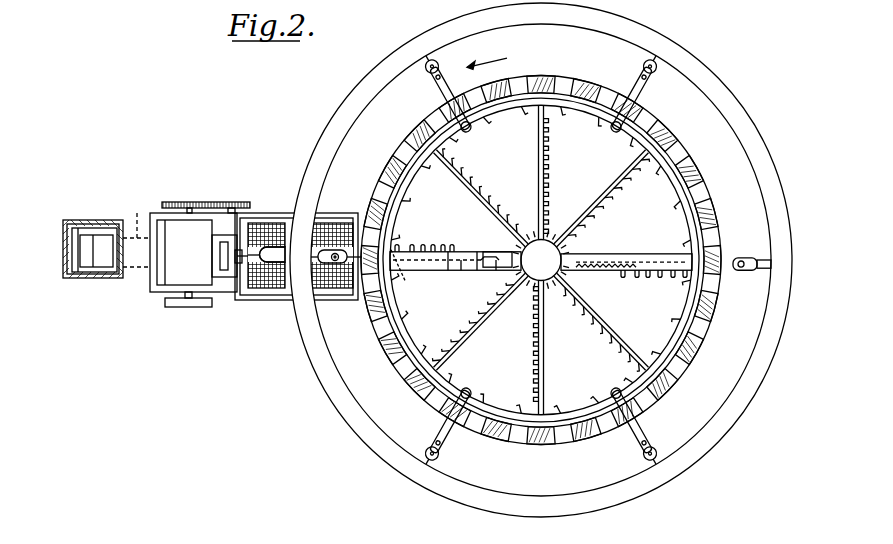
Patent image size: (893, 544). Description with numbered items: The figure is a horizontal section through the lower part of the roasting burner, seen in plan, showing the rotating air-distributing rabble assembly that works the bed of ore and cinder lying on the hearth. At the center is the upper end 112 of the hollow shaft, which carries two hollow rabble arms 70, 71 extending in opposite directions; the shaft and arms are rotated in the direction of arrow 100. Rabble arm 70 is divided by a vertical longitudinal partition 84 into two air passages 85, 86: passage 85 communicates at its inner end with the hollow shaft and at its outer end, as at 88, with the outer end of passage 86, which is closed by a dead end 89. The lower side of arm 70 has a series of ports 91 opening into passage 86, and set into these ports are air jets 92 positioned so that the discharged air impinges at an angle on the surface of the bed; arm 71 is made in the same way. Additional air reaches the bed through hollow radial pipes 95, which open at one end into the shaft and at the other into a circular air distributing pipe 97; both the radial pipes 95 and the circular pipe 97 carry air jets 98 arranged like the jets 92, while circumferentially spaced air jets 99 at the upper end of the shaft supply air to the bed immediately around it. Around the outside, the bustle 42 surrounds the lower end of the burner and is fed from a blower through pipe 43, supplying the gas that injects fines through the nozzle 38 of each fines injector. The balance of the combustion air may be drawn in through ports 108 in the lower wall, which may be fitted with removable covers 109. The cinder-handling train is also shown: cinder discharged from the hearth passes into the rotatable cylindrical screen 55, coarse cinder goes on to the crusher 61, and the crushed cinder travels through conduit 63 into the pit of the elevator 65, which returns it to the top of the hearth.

The nozzle 38 is at (531, 260).
The bustle 42 is at (782, 218).
The pipe 43 is at (270, 244).
The rotatable cylindrical screen 55 is at (275, 284).
The crusher 61 is at (177, 275).
The conduit 63 is at (134, 227).
The elevator 65 is at (65, 281).
The rabble arm 70 is at (455, 287).
The rabble arm 71 is at (626, 251).
The vertical longitudinal partition 84 is at (455, 281).
The air passage 85 is at (483, 279).
The air passage 86 is at (453, 240).
The outer-end communication 88 is at (415, 278).
The dead end 89 is at (498, 245).
The ports 91 is at (481, 240).
The air jets 92 is at (424, 229).
The hollow radial pipes 95 is at (541, 260).
The circular air distributing pipe 97 is at (565, 260).
The air jets 98 is at (540, 260).
The air jets 99 is at (600, 280).
The arrow 100 is at (487, 53).
The ports 108 is at (535, 260).
The removable covers 109 is at (525, 241).
The upper end of shaft 112 is at (546, 251).